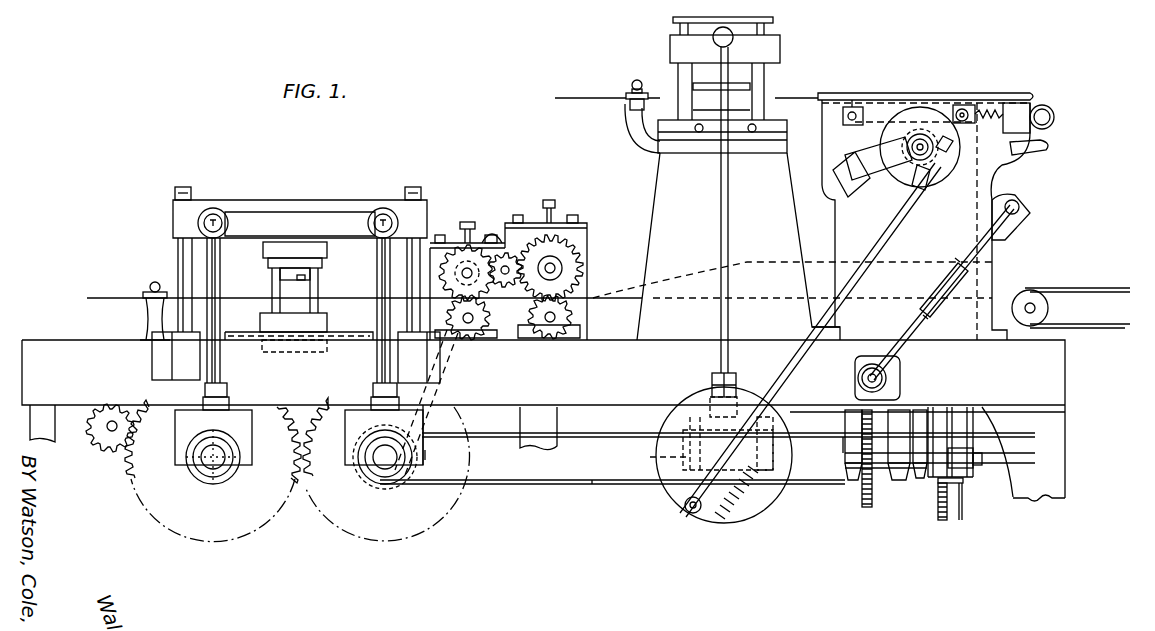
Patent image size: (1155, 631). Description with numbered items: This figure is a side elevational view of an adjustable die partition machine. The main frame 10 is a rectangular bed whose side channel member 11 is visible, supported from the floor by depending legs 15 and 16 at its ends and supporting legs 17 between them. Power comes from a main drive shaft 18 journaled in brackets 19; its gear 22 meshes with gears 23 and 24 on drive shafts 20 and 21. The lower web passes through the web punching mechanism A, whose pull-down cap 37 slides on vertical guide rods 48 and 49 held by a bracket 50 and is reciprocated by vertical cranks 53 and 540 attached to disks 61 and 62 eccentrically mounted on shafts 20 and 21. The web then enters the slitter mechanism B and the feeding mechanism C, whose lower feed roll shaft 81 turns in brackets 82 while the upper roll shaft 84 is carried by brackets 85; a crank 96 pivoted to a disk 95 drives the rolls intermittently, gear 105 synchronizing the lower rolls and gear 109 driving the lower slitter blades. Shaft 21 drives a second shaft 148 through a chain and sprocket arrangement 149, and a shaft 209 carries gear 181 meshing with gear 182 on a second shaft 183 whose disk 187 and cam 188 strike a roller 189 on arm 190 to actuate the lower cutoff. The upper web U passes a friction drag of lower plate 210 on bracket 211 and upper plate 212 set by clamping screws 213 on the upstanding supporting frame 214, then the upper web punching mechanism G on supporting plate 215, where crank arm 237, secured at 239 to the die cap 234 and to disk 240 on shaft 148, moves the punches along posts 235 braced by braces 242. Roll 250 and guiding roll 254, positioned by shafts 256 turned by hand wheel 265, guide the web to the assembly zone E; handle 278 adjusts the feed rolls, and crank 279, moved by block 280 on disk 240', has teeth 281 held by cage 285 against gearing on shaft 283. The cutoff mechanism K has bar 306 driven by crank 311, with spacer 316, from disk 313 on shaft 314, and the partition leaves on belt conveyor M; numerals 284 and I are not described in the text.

The main frame 10 is at (588, 462).
The side channel member 11 is at (1064, 366).
The depending legs 15 is at (40, 412).
The depending legs 16 is at (1068, 498).
The supporting legs 17 is at (530, 418).
The main drive shaft 18 is at (105, 432).
The brackets 19 is at (104, 414).
The drive shaft 20 is at (215, 465).
The drive shaft 21 is at (388, 480).
The gear 22 is at (100, 372).
The gear 23 is at (244, 530).
The gear 24 is at (360, 535).
The pull-down cap 37 is at (318, 205).
The vertical guide rods 48 is at (414, 240).
The vertical guide rods 49 is at (183, 262).
The bracket 50 is at (174, 352).
The vertical crank 53 is at (380, 306).
The vertical crank 540 is at (220, 292).
The disk 61 is at (420, 455).
The disk 62 is at (240, 455).
The shaft 81 is at (550, 340).
The brackets 82 is at (578, 340).
The shaft 84 is at (553, 268).
The brackets 85 is at (590, 244).
The disk 95 is at (364, 466).
The crank 96 is at (496, 340).
The gear 105 is at (572, 318).
The gear 109 is at (468, 340).
The second shaft 148 is at (660, 455).
The chain and sprocket arrangement 149 is at (594, 498).
The gear 181 is at (851, 470).
The gear 182 is at (867, 510).
The second shaft 183 is at (897, 470).
The disk 187 is at (942, 522).
The cam 188 is at (963, 510).
The roller 189 is at (966, 470).
The arm 190 is at (975, 438).
The shaft 209 is at (820, 456).
The lower plate 210 is at (628, 106).
The bracket 211 is at (640, 136).
The upper plate 212 is at (625, 95).
The clamping screws 213 is at (650, 94).
The upstanding supporting frame 214 is at (672, 165).
The supporting plate 215 is at (757, 145).
The die cap 234 is at (925, 68).
The posts 235 is at (772, 62).
The crank arm 237 is at (731, 256).
The securing point 239 is at (716, 40).
The disk 240 is at (694, 381).
The disk 240' is at (735, 469).
The braces 242 is at (673, 20).
The roll 250 is at (863, 100).
The guiding roll 254 is at (962, 105).
The shafts 256 is at (990, 108).
The hand wheel 265 is at (1055, 117).
The handle 278 is at (1048, 148).
The crank 279 is at (858, 276).
The block 280 is at (715, 525).
The teeth 281 is at (924, 186).
The shaft 283 is at (905, 145).
The casing 284 is at (838, 192).
The cage 285 is at (945, 151).
The elongated bar 306 is at (1018, 200).
The crank 311 is at (975, 240).
The disk 313 is at (898, 382).
The shaft 314 is at (858, 372).
The internally threaded spacer 316 is at (935, 302).
The web punching mechanism A is at (328, 285).
The slitter mechanism B is at (498, 302).
The feeding mechanism C is at (588, 284).
The assembly zone E is at (1000, 270).
The web punching mechanism G is at (774, 99).
The station I is at (118, 272).
The cutoff mechanism K is at (1020, 233).
The belt conveyor M is at (1076, 290).
The upper web U is at (818, 100).